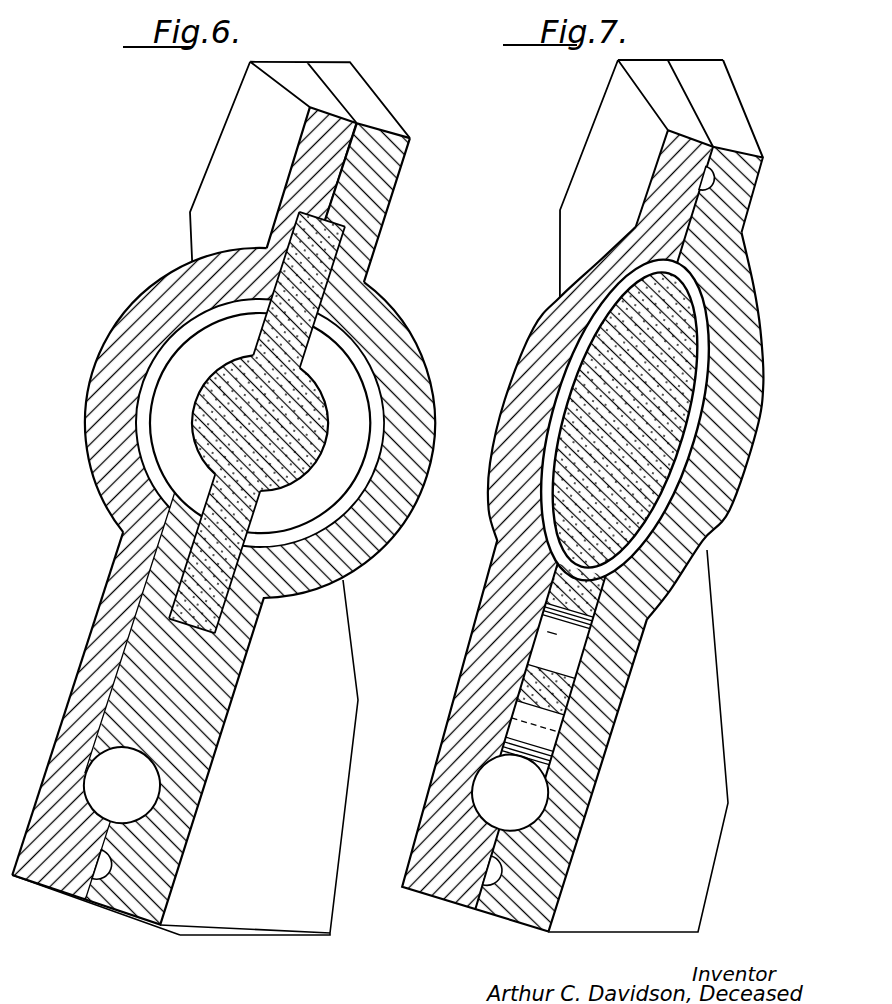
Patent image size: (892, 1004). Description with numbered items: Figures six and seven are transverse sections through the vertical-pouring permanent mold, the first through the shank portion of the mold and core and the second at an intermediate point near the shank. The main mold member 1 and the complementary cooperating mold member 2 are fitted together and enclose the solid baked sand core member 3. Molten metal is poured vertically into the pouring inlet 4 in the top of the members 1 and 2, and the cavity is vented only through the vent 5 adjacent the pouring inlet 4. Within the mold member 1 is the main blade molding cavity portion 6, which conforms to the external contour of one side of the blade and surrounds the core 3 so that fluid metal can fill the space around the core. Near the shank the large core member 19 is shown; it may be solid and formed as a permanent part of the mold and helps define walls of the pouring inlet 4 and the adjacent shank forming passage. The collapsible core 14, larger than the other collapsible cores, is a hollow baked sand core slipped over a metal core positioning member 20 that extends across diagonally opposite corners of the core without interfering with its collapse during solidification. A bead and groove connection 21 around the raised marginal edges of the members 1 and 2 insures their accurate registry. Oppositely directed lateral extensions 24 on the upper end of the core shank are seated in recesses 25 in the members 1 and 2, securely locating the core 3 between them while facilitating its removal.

In FIG. 6, the main mold member 1 is at (268, 525).
In FIG. 7, the main mold member 1 is at (663, 504).
In FIG. 6, the cooperating mold member 2 is at (178, 487).
In FIG. 7, the cooperating mold member 2 is at (581, 480).
In FIG. 6, the core member 3 is at (316, 423).
In FIG. 7, the core member 3 is at (635, 420).
In FIG. 6, the pouring inlet 4 is at (164, 785).
In FIG. 7, the pouring inlet 4 is at (562, 792).
In FIG. 6, the vent 5 is at (296, 425).
In FIG. 7, the main blade molding cavity portion 6 is at (636, 419).
In FIG. 7, the collapsible core 14 is at (654, 602).
In FIG. 6, the large core member 19 is at (81, 703).
In FIG. 7, the core positioning member 20 is at (636, 714).
In FIG. 6, the bead and groove connection 21 is at (157, 866).
In FIG. 7, the bead and groove connection 21 is at (600, 514).
In FIG. 6, the lateral extensions 24 is at (288, 423).
In FIG. 6, the recesses 25 is at (255, 337).